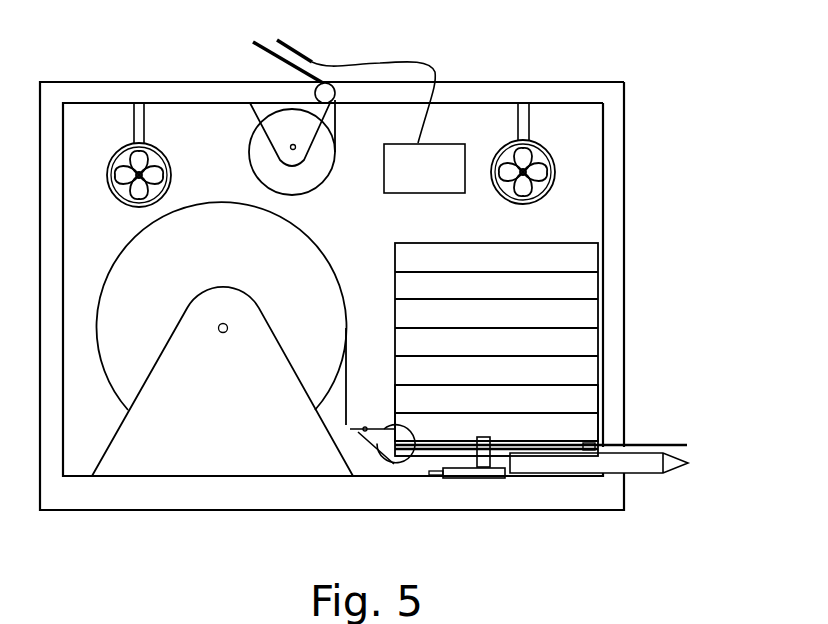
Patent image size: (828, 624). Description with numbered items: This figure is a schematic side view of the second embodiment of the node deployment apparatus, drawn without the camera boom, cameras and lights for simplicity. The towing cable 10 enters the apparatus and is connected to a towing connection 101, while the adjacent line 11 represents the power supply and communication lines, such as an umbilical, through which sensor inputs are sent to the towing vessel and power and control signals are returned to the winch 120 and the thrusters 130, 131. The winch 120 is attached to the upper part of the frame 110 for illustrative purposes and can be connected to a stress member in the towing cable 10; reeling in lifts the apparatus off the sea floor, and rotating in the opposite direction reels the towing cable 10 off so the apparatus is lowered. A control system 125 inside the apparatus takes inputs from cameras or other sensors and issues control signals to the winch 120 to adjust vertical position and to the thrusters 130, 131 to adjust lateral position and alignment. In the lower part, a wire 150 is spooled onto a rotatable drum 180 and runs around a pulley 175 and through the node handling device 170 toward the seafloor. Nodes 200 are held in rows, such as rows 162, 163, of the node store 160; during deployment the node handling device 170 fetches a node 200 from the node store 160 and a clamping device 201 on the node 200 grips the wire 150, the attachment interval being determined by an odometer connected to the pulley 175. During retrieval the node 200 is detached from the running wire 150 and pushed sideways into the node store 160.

The towing cable 10 is at (264, 56).
The power supply and communication line 11 is at (392, 62).
The towing connection 101 is at (325, 88).
The frame 110 is at (617, 132).
The winch 120 is at (313, 176).
The control system 125 is at (446, 188).
The thruster 130 is at (505, 199).
The thruster 131 is at (158, 160).
The wire 150 is at (652, 445).
The node store 160 is at (578, 230).
The row 162 is at (455, 438).
The row 163 is at (455, 410).
The node handling device 170 is at (415, 462).
The pulley 175 is at (365, 418).
The rotatable drum 180 is at (244, 279).
The node 200 is at (640, 466).
The clamping device 201 is at (590, 442).